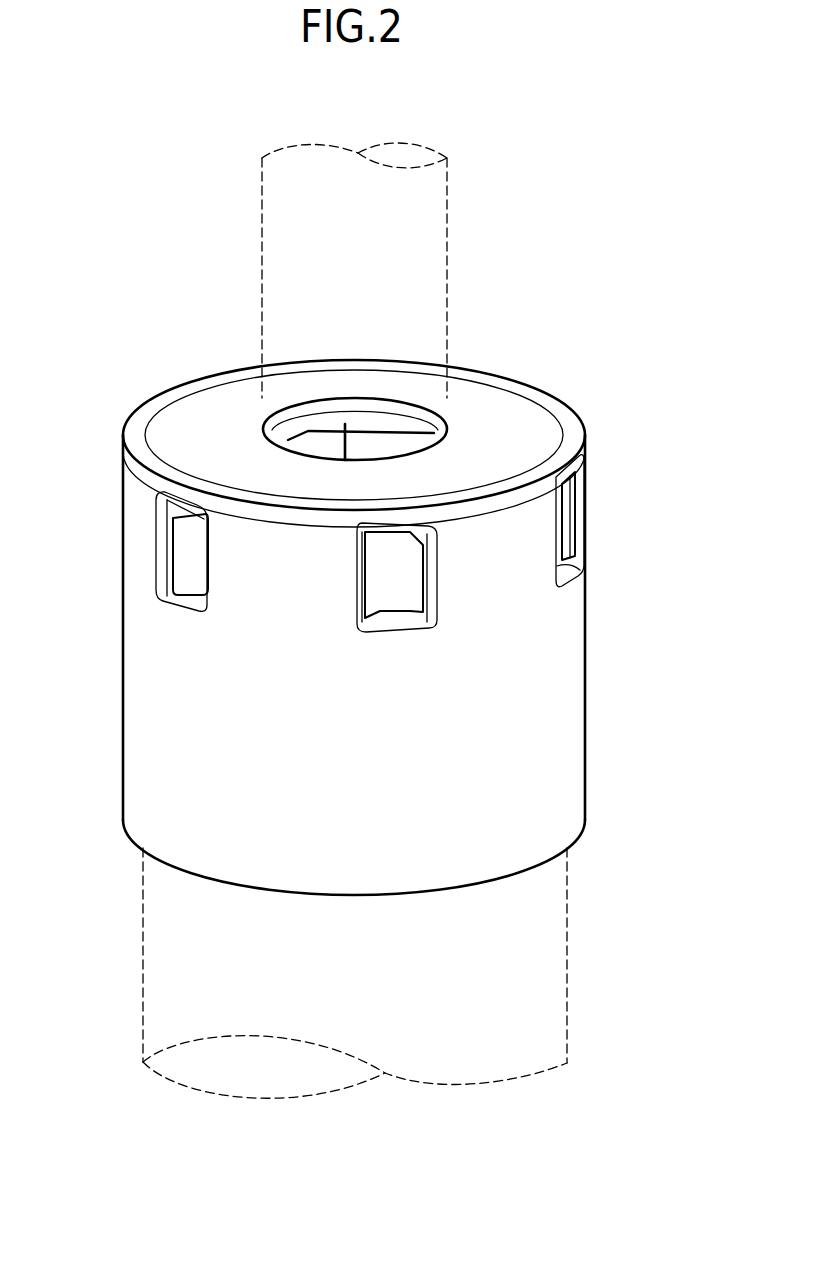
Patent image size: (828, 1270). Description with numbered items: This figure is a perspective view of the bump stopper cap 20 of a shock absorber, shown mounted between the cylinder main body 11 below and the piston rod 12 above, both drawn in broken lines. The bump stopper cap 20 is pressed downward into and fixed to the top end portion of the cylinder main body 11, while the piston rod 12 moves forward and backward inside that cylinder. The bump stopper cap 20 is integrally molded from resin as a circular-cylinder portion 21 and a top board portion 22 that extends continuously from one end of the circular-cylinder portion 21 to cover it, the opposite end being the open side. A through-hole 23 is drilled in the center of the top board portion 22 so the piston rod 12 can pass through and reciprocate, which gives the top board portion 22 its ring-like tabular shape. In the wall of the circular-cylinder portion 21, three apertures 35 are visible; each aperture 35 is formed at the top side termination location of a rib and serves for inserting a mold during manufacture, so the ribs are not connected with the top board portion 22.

The cylinder main body 11 is at (567, 1000).
The piston rod 12 is at (447, 236).
The bump stopper cap 20 is at (370, 595).
The circular-cylinder portion 21 is at (575, 768).
The top board portion 22 is at (543, 423).
The through-hole 23 is at (381, 398).
The aperture 35 is at (182, 560).